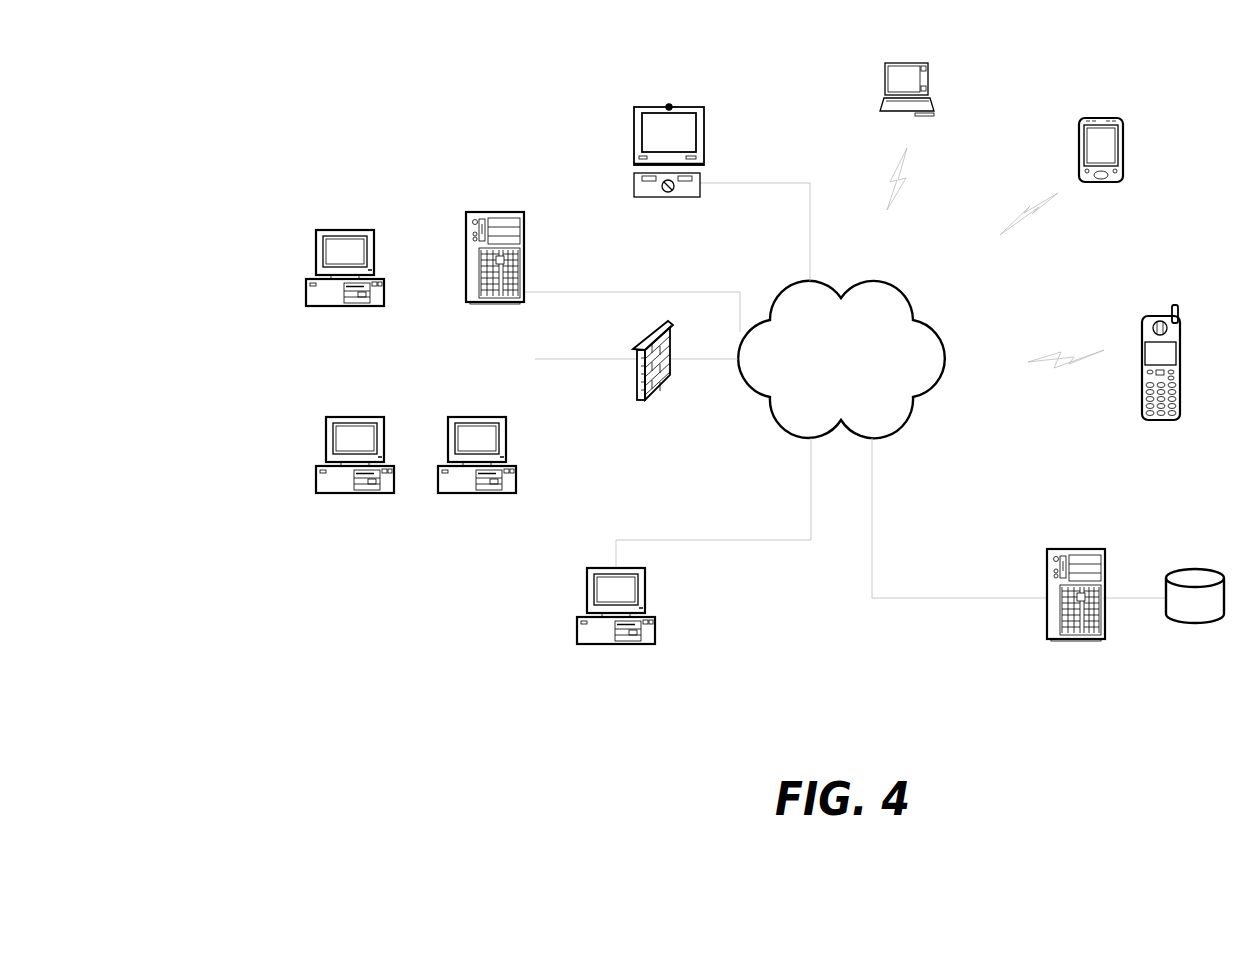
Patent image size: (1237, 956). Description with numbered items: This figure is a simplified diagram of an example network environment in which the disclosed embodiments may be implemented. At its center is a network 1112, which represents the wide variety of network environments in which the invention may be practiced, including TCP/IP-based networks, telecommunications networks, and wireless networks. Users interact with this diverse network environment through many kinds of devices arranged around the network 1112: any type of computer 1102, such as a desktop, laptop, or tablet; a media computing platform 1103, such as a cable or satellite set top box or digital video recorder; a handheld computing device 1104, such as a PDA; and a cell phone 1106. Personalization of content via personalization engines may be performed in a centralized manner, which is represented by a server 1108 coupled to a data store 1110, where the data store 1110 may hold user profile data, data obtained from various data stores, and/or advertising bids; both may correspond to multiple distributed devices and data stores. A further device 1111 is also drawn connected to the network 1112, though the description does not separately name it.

The computer 1102 is at (314, 257).
The media computing platform 1103 is at (633, 181).
The handheld computing device 1104 is at (1083, 118).
The cell phone 1106 is at (1143, 320).
The server 1108 is at (1055, 549).
The data store 1110 is at (1194, 568).
The server 1111 is at (496, 221).
The network 1112 is at (780, 293).